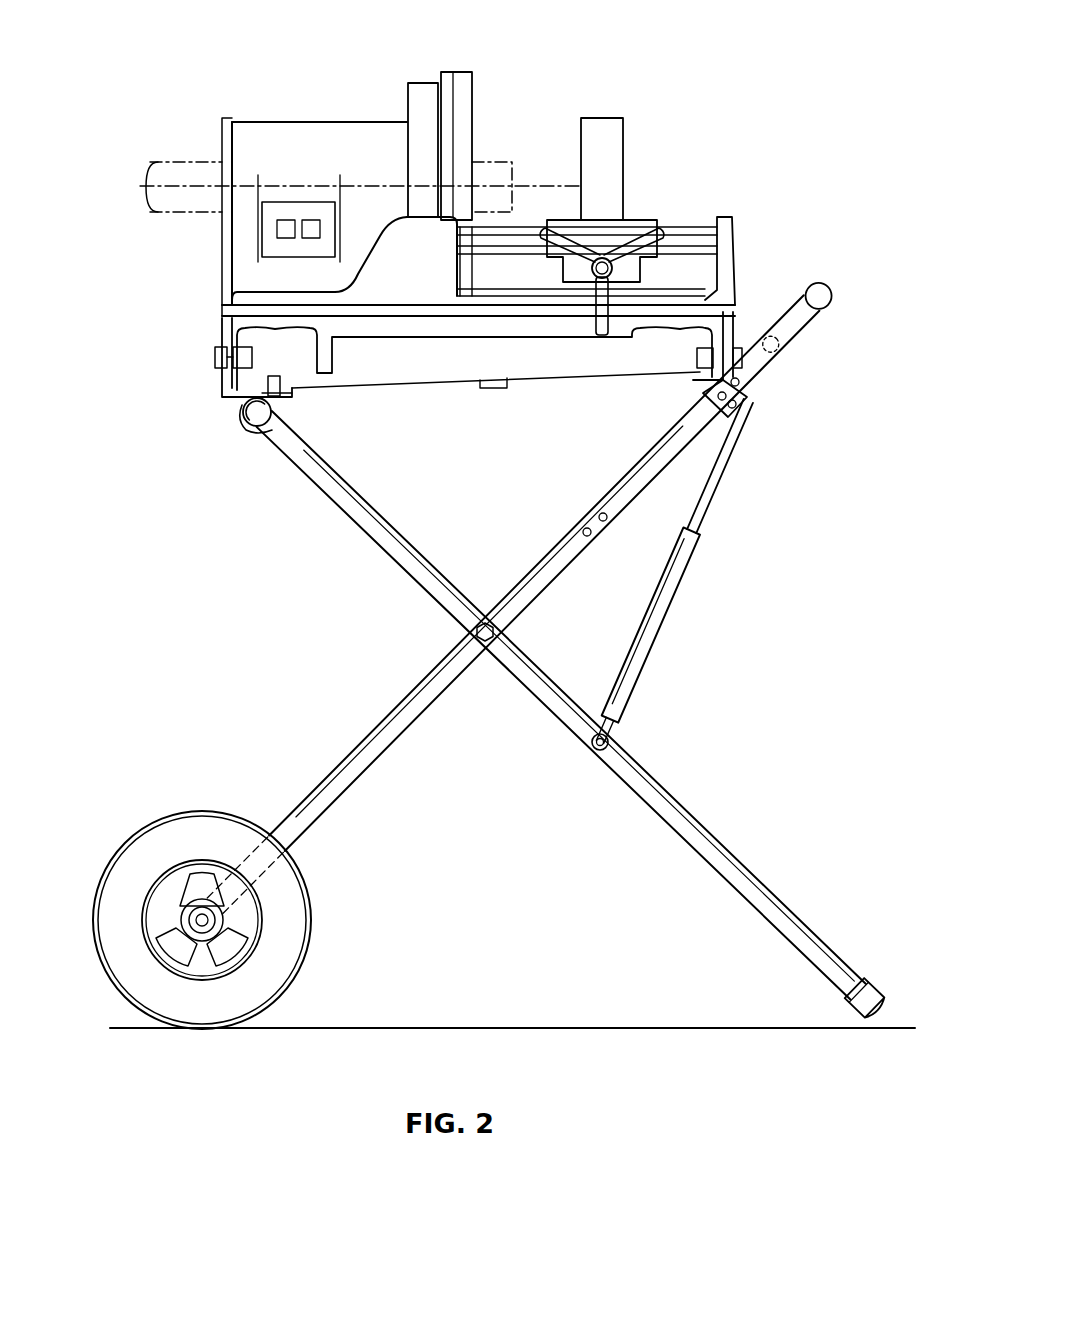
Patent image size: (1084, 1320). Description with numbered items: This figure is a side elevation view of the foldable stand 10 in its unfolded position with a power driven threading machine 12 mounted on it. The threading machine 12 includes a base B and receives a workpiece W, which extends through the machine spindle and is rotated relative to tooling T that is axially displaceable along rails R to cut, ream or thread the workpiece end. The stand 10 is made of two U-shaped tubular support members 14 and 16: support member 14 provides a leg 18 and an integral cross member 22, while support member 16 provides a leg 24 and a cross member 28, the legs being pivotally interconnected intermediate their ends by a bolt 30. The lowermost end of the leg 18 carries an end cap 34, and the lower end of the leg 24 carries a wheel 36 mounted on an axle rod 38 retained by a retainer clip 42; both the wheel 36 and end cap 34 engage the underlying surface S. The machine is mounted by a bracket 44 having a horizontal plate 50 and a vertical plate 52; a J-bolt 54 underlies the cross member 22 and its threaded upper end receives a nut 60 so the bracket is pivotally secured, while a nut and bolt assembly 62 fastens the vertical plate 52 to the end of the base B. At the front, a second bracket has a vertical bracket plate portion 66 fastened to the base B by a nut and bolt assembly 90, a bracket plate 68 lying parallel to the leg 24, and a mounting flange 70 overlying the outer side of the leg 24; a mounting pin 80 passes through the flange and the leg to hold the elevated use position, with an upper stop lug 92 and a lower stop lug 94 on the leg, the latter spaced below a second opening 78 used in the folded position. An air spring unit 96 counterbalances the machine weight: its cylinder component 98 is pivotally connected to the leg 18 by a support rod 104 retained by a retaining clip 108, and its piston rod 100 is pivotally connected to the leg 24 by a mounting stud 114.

The foldable stand 10 is at (292, 553).
The power driven threading machine 12 is at (566, 100).
The support member 14 is at (402, 488).
The support member 16 is at (632, 435).
The leg 18 is at (705, 825).
The cross member 22 is at (240, 422).
The leg 24 is at (545, 560).
The cross member 28 is at (826, 288).
The bolt 30 is at (470, 630).
The end cap 34 is at (850, 1012).
The wheel 36 is at (200, 812).
The axle rod 38 is at (225, 914).
The retainer clip 42 is at (195, 905).
The bracket 44 is at (205, 421).
The horizontal plate 50 is at (280, 397).
The vertical plate 52 is at (222, 385).
The J-bolt 54 is at (258, 427).
The nut 60 is at (290, 386).
The nut and bolt assembly 62 is at (205, 358).
The vertical bracket plate portion 66 is at (692, 370).
The bracket plate 68 is at (706, 385).
The mounting flange 70 is at (735, 410).
The second opening 78 is at (600, 512).
The mounting pin 80 is at (740, 402).
The nut and bolt assembly 90 is at (744, 325).
The stop lug 92 is at (745, 385).
The stop lug 94 is at (582, 530).
The air spring unit 96 is at (688, 620).
The cylinder component 98 is at (692, 566).
The piston rod 100 is at (714, 500).
The support rod 104 is at (600, 756).
The retaining clip 108 is at (590, 740).
The mounting stud 114 is at (795, 355).
The base B is at (200, 323).
The rails R is at (690, 235).
The underlying surface S is at (460, 1028).
The tooling T is at (648, 105).
The workpiece W is at (180, 160).